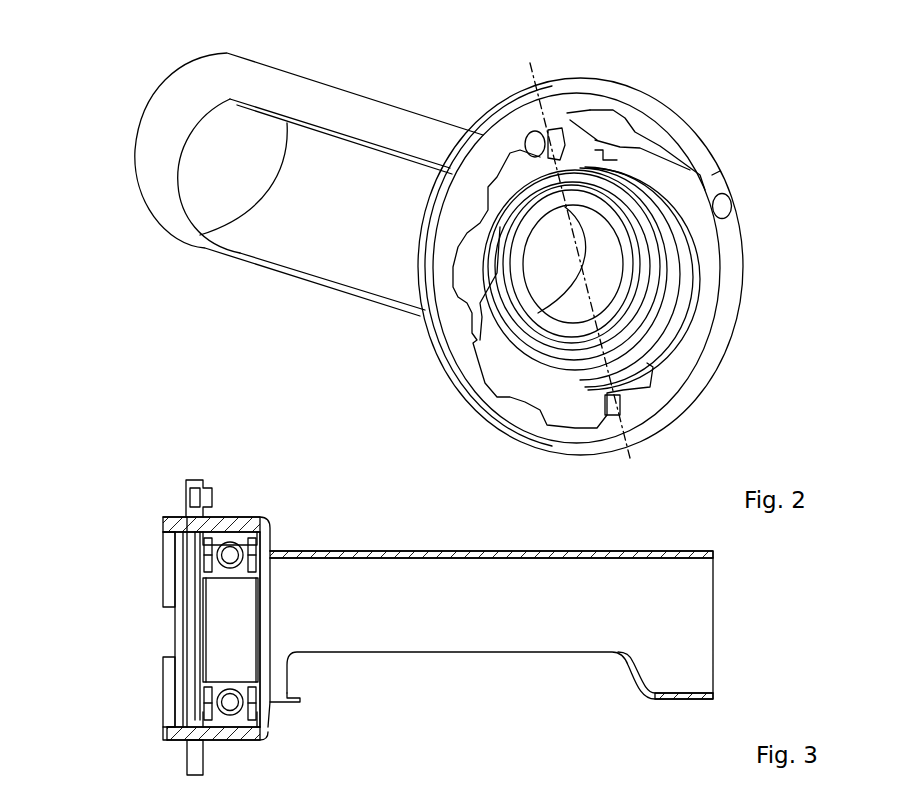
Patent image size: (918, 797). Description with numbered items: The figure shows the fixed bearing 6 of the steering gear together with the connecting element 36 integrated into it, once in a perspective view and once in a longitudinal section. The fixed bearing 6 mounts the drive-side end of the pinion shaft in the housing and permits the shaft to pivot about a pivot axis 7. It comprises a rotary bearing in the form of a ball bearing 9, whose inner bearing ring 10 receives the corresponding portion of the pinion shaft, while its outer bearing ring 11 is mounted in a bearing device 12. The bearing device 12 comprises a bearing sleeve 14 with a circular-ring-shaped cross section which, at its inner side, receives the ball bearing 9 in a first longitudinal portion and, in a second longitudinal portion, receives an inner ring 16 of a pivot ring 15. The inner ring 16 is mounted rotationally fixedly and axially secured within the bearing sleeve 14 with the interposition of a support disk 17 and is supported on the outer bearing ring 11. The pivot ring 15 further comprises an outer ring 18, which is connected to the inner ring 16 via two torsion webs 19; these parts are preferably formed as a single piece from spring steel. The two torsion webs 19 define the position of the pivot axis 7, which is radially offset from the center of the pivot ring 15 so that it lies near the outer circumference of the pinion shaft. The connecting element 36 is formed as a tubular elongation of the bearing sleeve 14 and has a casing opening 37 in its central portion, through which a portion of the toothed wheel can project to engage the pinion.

In FIG. 2, the fixed bearing 6 is at (557, 66).
In FIG. 3, the fixed bearing 6 is at (239, 495).
In FIG. 2, the pivot axis 7 is at (526, 69).
In FIG. 3, the ball bearing 9 is at (188, 544).
In FIG. 2, the inner bearing ring 10 is at (603, 260).
In FIG. 3, the inner bearing ring 10 is at (213, 565).
In FIG. 3, the outer bearing ring 11 is at (217, 533).
In FIG. 2, the bearing device 12 is at (650, 84).
In FIG. 3, the bearing device 12 is at (254, 514).
In FIG. 3, the bearing sleeve 14 is at (180, 731).
In FIG. 2, the pivot ring 15 is at (727, 132).
In FIG. 3, the pivot ring 15 is at (201, 479).
In FIG. 3, the inner ring 16 is at (197, 662).
In FIG. 2, the support disk 17 is at (632, 167).
In FIG. 3, the support disk 17 is at (200, 700).
In FIG. 2, the outer ring 18 is at (712, 175).
In FIG. 3, the outer ring 18 is at (187, 752).
In FIG. 2, the torsion web 19 is at (555, 137).
In FIG. 2, the connecting element 36 is at (360, 120).
In FIG. 3, the connecting element 36 is at (415, 582).
In FIG. 2, the casing opening 37 is at (320, 252).
In FIG. 3, the casing opening 37 is at (408, 690).